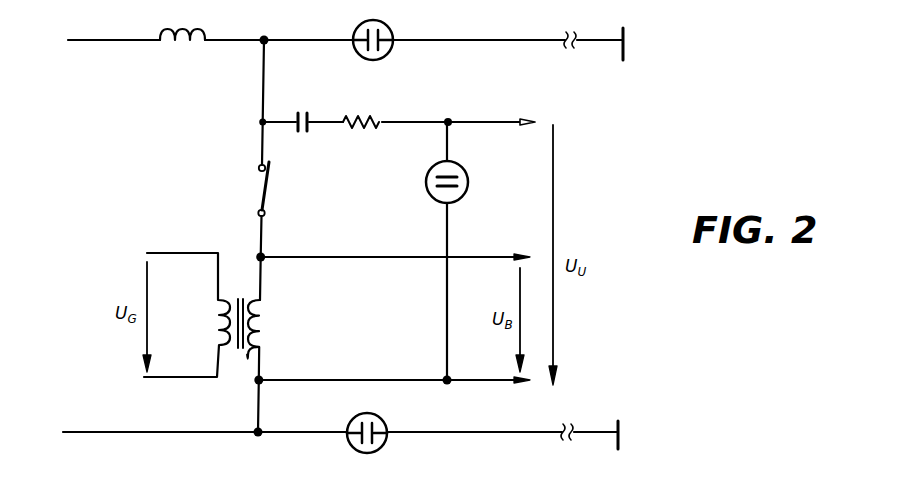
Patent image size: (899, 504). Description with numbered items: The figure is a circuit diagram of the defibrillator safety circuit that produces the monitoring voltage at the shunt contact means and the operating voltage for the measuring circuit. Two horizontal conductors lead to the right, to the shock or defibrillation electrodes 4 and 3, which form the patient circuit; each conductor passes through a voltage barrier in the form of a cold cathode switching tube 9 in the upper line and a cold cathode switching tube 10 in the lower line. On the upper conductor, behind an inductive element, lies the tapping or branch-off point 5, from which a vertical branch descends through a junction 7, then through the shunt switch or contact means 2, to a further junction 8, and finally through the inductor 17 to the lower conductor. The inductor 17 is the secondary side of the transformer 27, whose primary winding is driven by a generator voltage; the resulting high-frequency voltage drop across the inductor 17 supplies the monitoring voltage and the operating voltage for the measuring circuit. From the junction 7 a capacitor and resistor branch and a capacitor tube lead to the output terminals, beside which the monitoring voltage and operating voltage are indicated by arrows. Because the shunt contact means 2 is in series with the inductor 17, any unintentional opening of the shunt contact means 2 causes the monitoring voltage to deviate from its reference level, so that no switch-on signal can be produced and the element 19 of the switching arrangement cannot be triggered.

The thyristor 19 is at (195, 33).
The tapping or branch-off point 5 is at (266, 38).
The cold cathode switching tube 9 is at (387, 27).
The defibrillation electrode 4 is at (627, 38).
The junction point with capacitor and resistor branch 7 is at (260, 122).
The shunt contact means 2 is at (268, 176).
The junction point 8 is at (264, 254).
The transformer 27 is at (222, 297).
The inductor 17 is at (264, 312).
The cold cathode switching tube 10 is at (382, 446).
The defibrillation electrode 3 is at (620, 448).